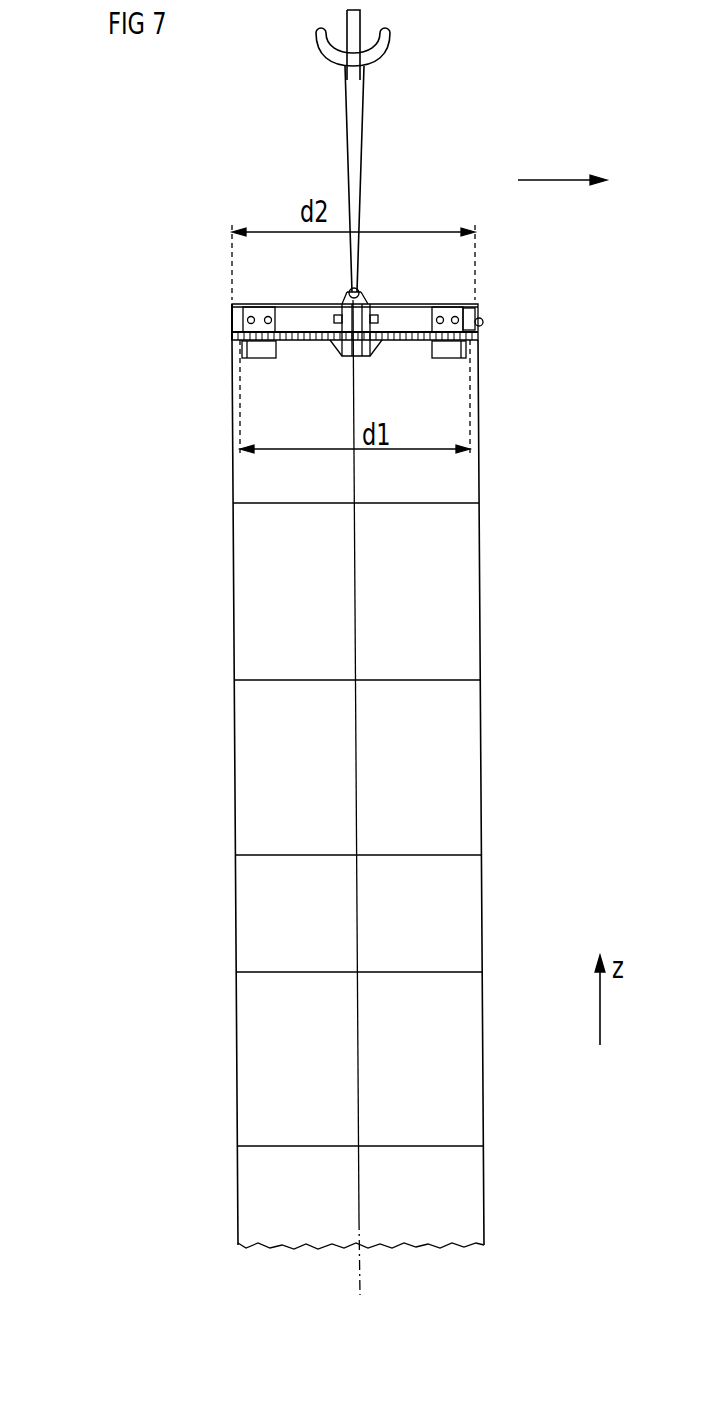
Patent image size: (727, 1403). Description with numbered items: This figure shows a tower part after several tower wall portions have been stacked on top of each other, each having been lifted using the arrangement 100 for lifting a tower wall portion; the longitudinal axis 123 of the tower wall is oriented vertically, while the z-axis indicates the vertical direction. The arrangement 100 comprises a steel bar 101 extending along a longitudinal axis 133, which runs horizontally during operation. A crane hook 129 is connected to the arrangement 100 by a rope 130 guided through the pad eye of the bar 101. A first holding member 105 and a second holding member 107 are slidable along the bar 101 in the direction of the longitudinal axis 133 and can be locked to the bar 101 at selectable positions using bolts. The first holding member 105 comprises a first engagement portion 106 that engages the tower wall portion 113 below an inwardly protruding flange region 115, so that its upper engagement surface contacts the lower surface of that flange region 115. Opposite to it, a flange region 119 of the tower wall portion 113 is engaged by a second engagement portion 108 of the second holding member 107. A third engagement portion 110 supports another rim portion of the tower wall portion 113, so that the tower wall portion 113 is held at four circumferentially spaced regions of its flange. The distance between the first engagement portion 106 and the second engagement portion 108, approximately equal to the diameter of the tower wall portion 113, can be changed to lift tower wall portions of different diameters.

The arrangement for lifting a tower wall portion 100 is at (200, 340).
The bar 101 is at (402, 312).
The first holding member 105 is at (260, 303).
The first engagement portion 106 is at (258, 360).
The second holding member 107 is at (445, 303).
The second engagement portion 108 is at (450, 360).
The third engagement portion 110 is at (347, 358).
The tower wall portion 113 is at (470, 478).
The flange region 115 is at (232, 333).
The flange region 119 is at (484, 322).
The longitudinal axis of the tower wall 123 is at (362, 1275).
The hook 129 is at (352, 25).
The rope 130 is at (378, 118).
The longitudinal axis 133 is at (552, 178).